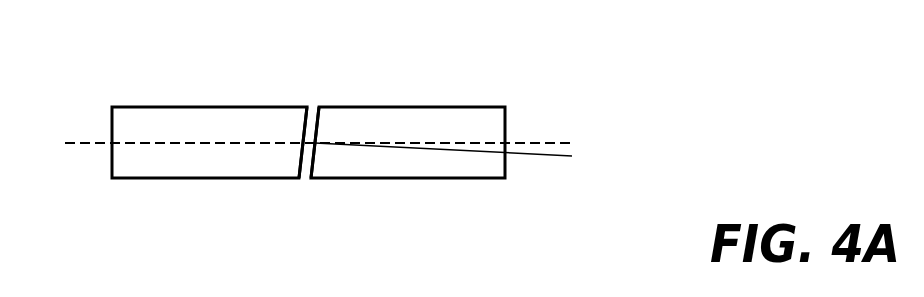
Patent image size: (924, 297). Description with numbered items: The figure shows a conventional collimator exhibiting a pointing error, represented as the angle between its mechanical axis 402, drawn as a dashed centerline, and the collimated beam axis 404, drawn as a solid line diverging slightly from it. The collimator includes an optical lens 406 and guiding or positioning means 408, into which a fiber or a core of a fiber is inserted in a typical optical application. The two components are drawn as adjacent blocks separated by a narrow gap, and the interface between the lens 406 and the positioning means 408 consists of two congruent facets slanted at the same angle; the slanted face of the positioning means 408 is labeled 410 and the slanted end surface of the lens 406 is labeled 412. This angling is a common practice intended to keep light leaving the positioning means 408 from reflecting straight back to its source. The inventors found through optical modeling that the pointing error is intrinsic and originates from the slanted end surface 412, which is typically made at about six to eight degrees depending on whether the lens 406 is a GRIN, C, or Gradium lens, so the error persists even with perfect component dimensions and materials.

The mechanical axis 402 is at (570, 143).
The collimated beam axis 404 is at (572, 156).
The optical lens 406 is at (355, 117).
The positioning means 408 is at (173, 118).
The angled end face of first segment 410 is at (298, 160).
The end surface 412 is at (313, 158).